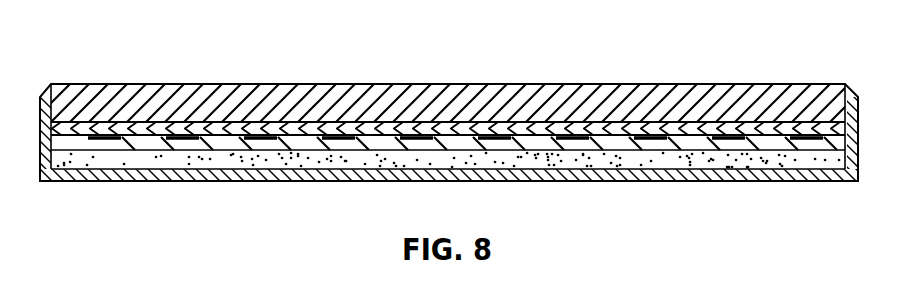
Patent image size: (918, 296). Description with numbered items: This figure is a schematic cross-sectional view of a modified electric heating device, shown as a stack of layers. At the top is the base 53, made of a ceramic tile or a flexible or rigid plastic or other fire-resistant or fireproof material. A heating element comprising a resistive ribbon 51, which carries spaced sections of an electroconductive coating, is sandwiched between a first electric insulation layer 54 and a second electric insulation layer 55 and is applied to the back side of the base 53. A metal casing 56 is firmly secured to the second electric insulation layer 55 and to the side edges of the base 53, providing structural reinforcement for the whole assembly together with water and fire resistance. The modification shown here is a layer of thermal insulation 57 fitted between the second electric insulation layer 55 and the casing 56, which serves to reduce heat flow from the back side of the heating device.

The resistive ribbon 51 is at (415, 136).
The base 53 is at (242, 95).
The first electric insulation layer 54 is at (435, 133).
The second electric insulation layer 55 is at (592, 145).
The metal casing 56 is at (133, 182).
The layer of thermal insulation 57 is at (263, 158).